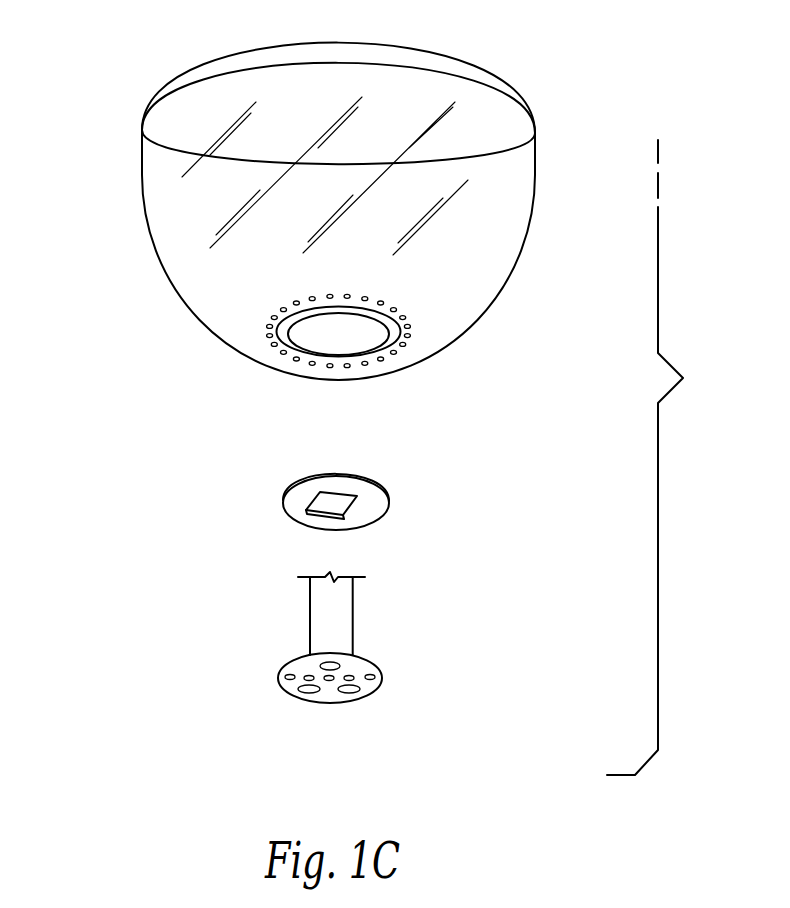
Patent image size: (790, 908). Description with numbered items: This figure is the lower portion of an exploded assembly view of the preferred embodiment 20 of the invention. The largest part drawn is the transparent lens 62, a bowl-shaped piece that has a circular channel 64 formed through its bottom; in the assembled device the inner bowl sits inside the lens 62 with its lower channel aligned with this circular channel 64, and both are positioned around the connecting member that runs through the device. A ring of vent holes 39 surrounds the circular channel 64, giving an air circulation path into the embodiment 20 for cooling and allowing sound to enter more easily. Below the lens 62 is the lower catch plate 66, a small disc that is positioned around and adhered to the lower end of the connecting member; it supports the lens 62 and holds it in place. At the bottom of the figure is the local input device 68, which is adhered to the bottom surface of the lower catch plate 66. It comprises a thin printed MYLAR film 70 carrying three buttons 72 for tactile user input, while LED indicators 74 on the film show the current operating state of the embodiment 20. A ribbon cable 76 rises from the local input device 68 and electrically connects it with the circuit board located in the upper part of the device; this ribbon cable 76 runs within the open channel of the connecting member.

The preferred embodiment 20 is at (663, 457).
The vent holes 39 is at (277, 324).
The transparent lens 62 is at (112, 84).
The circular channel 64 is at (324, 346).
The lower catch plate 66 is at (387, 503).
The local input device 68 is at (289, 635).
The thin printed MYLAR film 70 is at (383, 678).
The buttons 72 is at (338, 666).
The LED indicators 74 is at (290, 675).
The ribbon cable 76 is at (350, 605).